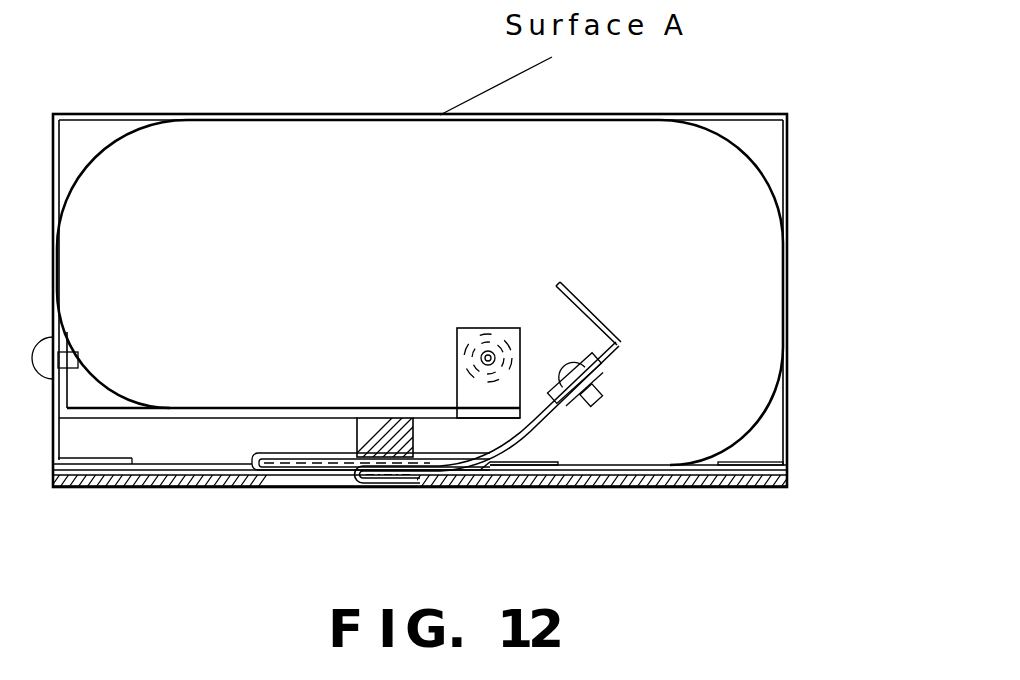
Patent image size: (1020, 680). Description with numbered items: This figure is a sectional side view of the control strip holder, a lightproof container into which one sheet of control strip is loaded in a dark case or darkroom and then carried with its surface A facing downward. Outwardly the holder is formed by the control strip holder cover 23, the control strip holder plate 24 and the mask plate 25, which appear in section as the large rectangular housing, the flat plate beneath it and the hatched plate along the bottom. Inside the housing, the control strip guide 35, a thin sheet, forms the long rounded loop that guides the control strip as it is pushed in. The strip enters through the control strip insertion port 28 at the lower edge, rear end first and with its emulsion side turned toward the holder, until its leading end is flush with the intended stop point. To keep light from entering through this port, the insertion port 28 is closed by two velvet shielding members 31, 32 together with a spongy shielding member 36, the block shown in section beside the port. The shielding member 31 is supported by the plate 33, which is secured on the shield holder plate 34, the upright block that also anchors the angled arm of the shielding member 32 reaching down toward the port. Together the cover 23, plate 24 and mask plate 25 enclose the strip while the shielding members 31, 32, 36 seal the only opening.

The control strip holder cover 23 is at (788, 390).
The control strip holder plate 24 is at (790, 472).
The mask plate 25 is at (765, 488).
The control strip insertion port 28 is at (320, 483).
The shielding member 31 is at (553, 462).
The shielding member 32 is at (512, 437).
The plate 33 is at (603, 323).
The shield holder plate 34 is at (433, 408).
The control strip guide 35 is at (733, 157).
The spongy shielding member 36 is at (357, 418).